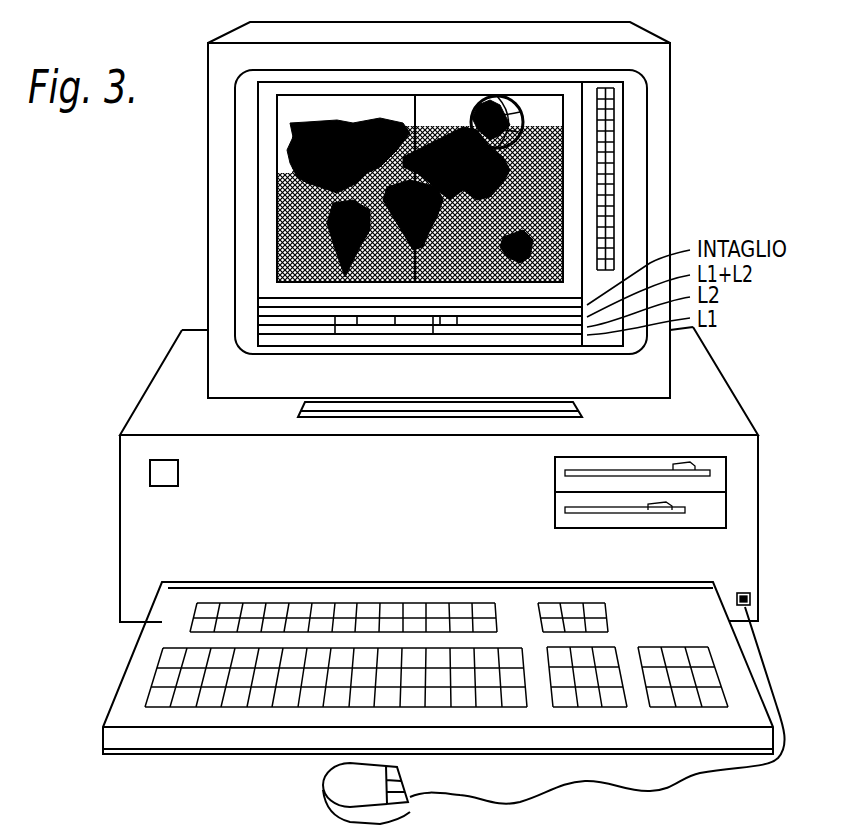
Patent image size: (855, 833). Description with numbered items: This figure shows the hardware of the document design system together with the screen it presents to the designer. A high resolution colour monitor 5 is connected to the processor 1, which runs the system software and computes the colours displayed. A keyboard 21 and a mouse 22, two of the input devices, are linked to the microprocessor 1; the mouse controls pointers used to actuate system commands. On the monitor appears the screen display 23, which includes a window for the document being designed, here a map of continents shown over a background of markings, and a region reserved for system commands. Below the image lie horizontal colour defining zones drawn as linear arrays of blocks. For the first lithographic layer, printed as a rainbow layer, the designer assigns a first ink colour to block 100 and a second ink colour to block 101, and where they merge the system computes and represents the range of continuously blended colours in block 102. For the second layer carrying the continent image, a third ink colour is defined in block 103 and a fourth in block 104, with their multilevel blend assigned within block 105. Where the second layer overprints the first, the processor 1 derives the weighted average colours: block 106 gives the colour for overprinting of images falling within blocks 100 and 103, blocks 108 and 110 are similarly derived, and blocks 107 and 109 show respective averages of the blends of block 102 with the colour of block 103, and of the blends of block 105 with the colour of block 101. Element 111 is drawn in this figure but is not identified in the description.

The processor 1 is at (742, 488).
The high resolution colour monitor 5 is at (662, 157).
The keyboard 21 is at (134, 674).
The mouse 22 is at (400, 824).
The screen display 23 is at (276, 218).
The block 100 is at (295, 330).
The block 101 is at (433, 318).
The block 102 is at (341, 328).
The block 103 is at (297, 326).
The block 104 is at (504, 316).
The block 105 is at (447, 320).
The block 106 is at (297, 318).
The block 107 is at (335, 314).
The block 108 is at (395, 316).
The block 109 is at (440, 316).
The block 110 is at (508, 318).
The status line 111 is at (297, 305).